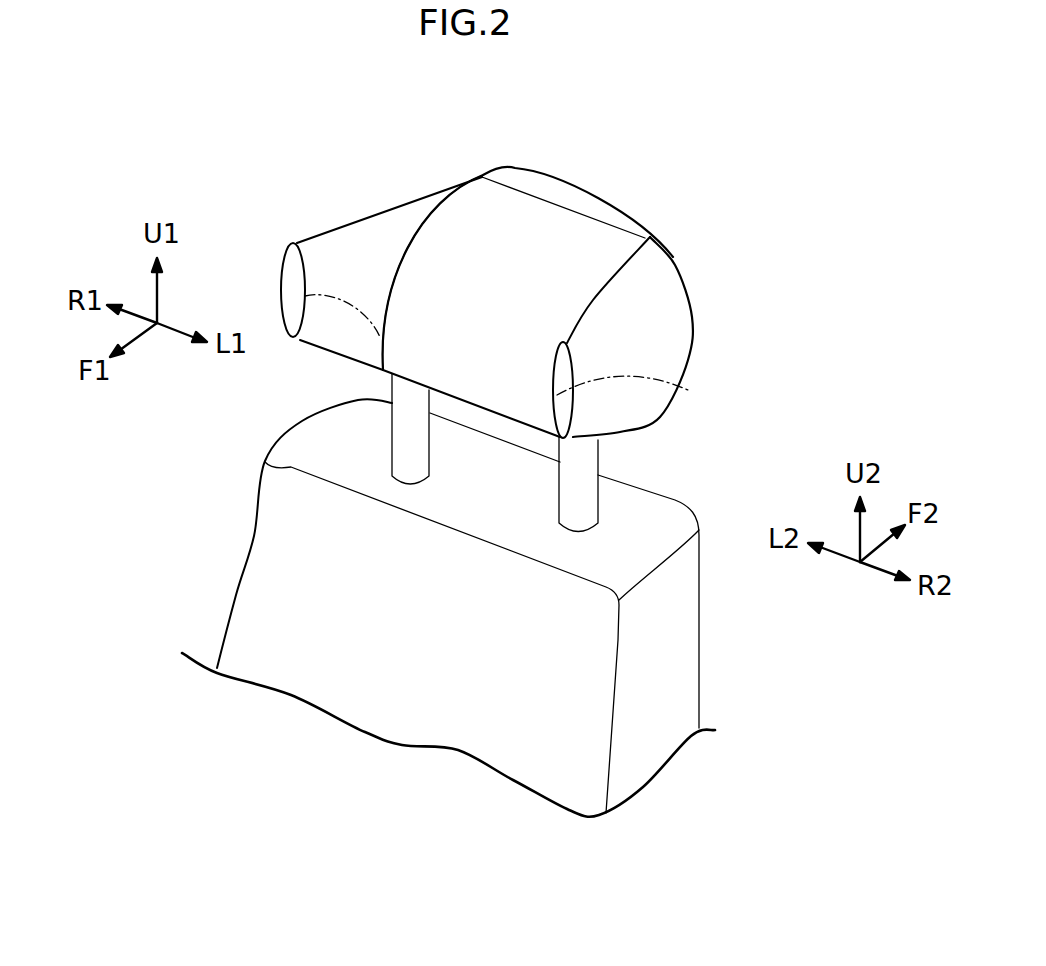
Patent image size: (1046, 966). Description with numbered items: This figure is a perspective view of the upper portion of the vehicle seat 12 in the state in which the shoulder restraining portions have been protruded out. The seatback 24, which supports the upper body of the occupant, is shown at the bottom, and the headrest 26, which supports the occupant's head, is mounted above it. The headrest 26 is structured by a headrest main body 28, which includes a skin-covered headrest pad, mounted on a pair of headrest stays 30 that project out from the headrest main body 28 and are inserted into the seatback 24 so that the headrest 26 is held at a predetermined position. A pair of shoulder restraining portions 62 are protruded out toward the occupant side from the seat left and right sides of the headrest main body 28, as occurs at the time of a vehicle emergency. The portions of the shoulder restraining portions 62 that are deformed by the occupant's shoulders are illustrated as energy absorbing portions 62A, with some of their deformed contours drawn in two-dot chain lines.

The vehicle seat 12 is at (183, 585).
The seatback 24 is at (703, 660).
The headrest 26 is at (510, 256).
The headrest main body 28 is at (523, 217).
The headrest stays 30 is at (652, 468).
The shoulder restraining portions 62 is at (357, 217).
The energy absorbing portions 62A is at (322, 326).